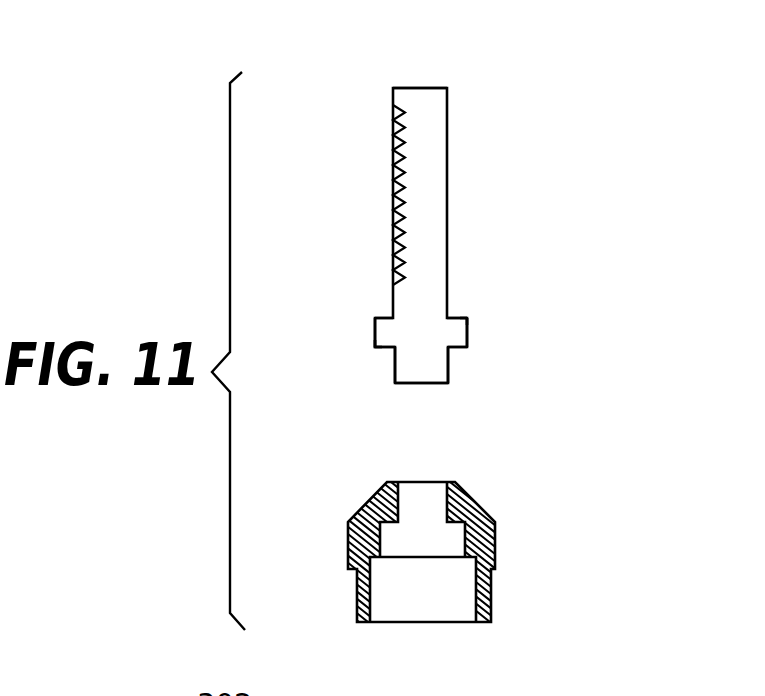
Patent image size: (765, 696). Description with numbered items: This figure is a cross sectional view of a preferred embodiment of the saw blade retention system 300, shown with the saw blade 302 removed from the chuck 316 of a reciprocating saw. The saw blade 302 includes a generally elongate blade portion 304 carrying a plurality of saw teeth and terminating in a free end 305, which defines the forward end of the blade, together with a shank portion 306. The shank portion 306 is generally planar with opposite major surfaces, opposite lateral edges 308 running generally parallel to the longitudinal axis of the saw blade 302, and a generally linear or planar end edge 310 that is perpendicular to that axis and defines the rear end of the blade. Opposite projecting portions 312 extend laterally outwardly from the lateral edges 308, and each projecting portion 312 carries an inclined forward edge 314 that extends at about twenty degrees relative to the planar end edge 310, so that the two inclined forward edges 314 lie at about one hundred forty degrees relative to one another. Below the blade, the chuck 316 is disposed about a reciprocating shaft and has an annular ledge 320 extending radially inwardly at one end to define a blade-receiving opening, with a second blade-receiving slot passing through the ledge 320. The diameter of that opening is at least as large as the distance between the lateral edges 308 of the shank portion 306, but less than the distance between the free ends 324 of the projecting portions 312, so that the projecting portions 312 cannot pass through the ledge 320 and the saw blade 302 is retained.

The saw blade retention system 300 is at (552, 222).
The saw blade 302 is at (452, 203).
The blade portion 304 is at (397, 215).
The free end 305 is at (425, 88).
The shank portion 306 is at (450, 365).
The lateral edges 308 is at (450, 350).
The end edge 310 is at (428, 385).
The projecting portions 312 is at (373, 328).
The inclined forward edge 314 is at (387, 313).
The chuck 316 is at (497, 558).
The annular ledge 320 is at (402, 462).
The free ends 324 is at (468, 320).